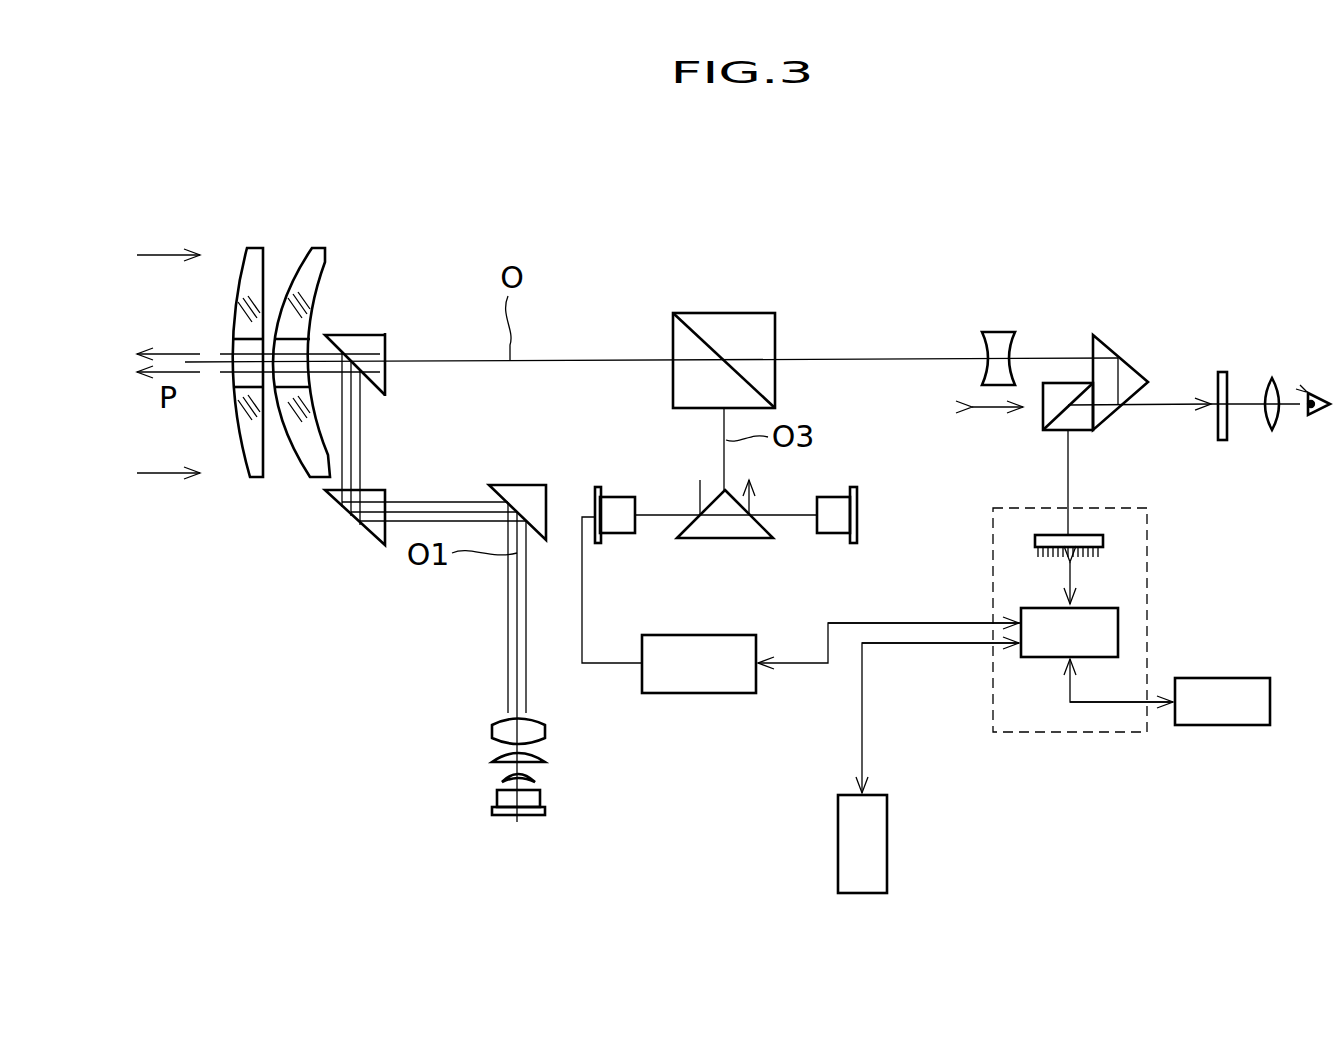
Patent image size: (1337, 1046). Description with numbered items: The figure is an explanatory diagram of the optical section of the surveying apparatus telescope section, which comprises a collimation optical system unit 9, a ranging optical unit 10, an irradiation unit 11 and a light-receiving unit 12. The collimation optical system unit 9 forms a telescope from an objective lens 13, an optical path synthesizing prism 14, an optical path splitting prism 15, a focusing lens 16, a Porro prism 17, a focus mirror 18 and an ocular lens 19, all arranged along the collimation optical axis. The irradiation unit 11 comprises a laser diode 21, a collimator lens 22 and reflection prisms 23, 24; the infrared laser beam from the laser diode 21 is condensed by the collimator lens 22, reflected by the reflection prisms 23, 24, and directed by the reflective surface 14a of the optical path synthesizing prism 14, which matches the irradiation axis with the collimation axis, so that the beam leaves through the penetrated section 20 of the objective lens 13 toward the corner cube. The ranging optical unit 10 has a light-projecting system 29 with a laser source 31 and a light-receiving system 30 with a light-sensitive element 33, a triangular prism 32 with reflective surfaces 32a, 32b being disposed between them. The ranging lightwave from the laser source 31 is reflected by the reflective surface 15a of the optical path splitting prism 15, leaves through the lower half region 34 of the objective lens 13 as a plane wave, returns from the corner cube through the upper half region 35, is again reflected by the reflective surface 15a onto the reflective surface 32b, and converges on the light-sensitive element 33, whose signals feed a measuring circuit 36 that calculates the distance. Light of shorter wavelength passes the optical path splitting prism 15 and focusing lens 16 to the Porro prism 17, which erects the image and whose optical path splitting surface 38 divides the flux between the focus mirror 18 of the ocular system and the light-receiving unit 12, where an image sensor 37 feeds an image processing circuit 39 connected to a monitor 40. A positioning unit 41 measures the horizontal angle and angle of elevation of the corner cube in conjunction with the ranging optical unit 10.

The collimation optical system unit 9 is at (912, 350).
The ranging optical unit 10 is at (677, 560).
The irradiation unit 11 is at (445, 598).
The light-receiving unit 12 is at (1147, 572).
The objective lens 13 is at (250, 486).
The optical path synthesizing prism 14 is at (373, 335).
The reflective surface 14a is at (387, 400).
The optical path splitting prism 15 is at (722, 313).
The reflective surface 15a is at (713, 347).
The focusing lens 16 is at (993, 332).
The Porro prism 17 is at (1085, 432).
The focus mirror 18 is at (1225, 372).
The ocular lens 19 is at (1272, 437).
The penetrated section 20 is at (285, 312).
The laser diode 21 is at (545, 808).
The collimator lens 22 is at (485, 718).
The reflection prism 23 is at (510, 485).
The reflection prism 24 is at (367, 540).
The light-projecting system 29 is at (806, 478).
The light-receiving system 30 is at (655, 490).
The laser source 31 is at (853, 495).
The triangular prism 32 is at (770, 540).
The reflective surface 32a is at (775, 532).
The reflective surface 32b is at (680, 540).
The light-sensitive element 33 is at (612, 497).
The lower half region 34 is at (238, 448).
The upper half region 35 is at (318, 262).
The measuring circuit 36 is at (700, 693).
The image sensor 37 is at (1050, 535).
The optical path splitting surface 38 is at (1068, 383).
The image processing circuit 39 is at (1053, 648).
The monitor 40 is at (1225, 725).
The positioning unit 41 is at (887, 840).